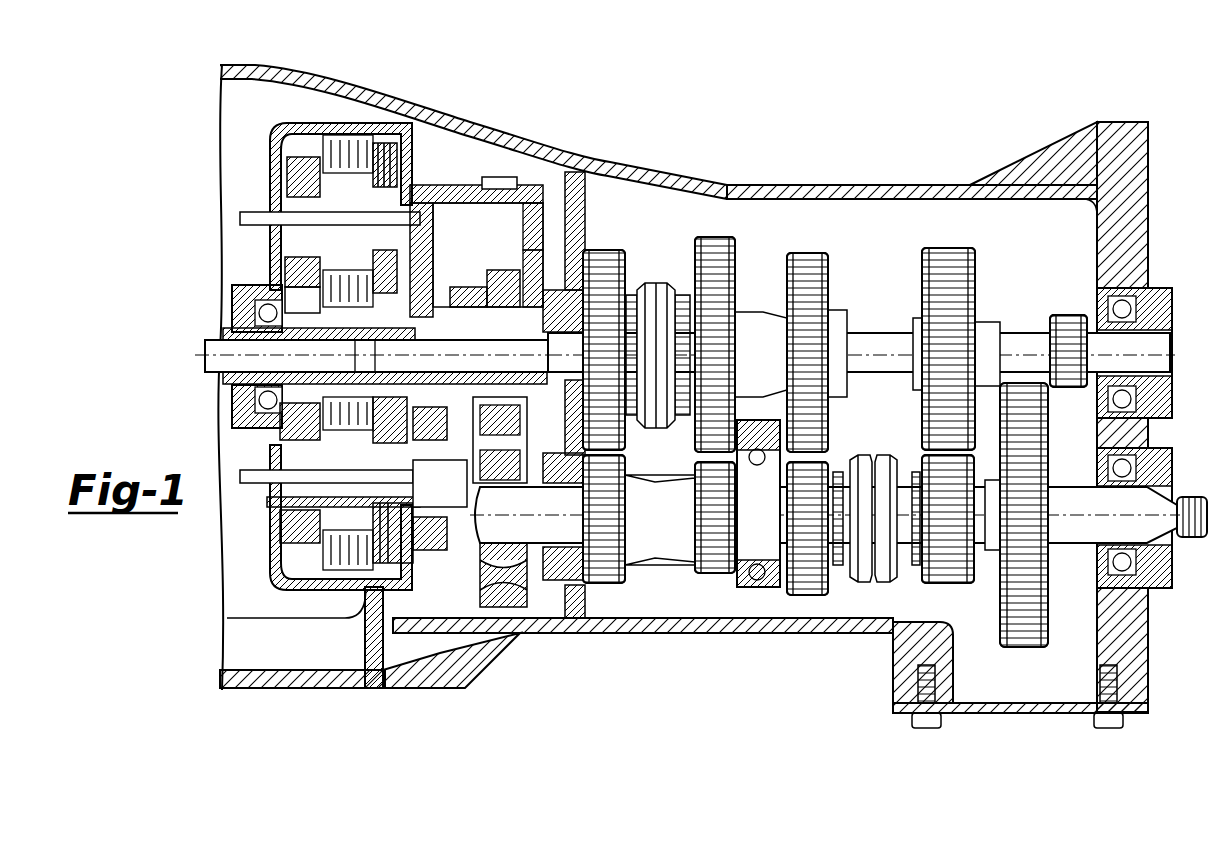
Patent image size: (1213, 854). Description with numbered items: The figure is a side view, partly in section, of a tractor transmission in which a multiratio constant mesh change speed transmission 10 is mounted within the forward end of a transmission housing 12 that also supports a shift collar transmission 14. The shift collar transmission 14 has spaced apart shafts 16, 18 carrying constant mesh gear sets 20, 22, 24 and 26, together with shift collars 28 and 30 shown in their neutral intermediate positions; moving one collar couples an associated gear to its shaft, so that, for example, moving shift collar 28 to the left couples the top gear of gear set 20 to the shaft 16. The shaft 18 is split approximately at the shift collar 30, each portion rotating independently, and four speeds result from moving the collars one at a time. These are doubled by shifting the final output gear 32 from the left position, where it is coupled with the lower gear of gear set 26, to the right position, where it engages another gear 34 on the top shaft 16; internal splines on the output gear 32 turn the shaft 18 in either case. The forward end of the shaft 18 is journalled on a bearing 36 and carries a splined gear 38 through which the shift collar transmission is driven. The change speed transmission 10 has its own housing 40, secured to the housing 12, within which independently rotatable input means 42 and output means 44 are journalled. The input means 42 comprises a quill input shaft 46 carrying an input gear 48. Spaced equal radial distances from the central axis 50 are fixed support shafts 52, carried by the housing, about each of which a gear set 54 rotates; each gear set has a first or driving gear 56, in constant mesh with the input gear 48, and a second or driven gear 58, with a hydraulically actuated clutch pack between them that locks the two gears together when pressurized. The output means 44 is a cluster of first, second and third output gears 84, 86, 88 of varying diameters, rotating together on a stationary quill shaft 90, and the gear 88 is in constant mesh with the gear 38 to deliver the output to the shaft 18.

The multiratio constant mesh change speed transmission 10 is at (275, 640).
The transmission housing 12 is at (375, 676).
The shift collar transmission 14 is at (848, 250).
The top shaft 16 is at (870, 335).
The lower shaft 18 is at (1080, 535).
The gear set 20 is at (612, 240).
The gear set 22 is at (713, 232).
The gear set 24 is at (800, 248).
The output gear set 26 is at (950, 240).
The shift collar 28 is at (655, 300).
The shift collar 30 is at (875, 578).
The final output gear 32 is at (1040, 642).
The another gear 34 is at (1068, 318).
The bearing 36 is at (580, 575).
The gear 38 is at (502, 640).
The housing 40 is at (563, 260).
The input means 42 is at (275, 283).
The output means 44 is at (437, 270).
The input shaft 46 is at (232, 328).
The input gear 48 is at (290, 305).
The central axis 50 is at (222, 368).
The fixed support shafts 52 is at (433, 162).
The gear set 54 is at (438, 200).
The first or driving gear 56 is at (303, 152).
The second or driven gear 58 is at (540, 250).
The first output gear 84 is at (500, 183).
The second output gear 86 is at (508, 270).
The third output gear 88 is at (540, 290).
The stationary quill shaft 90 is at (473, 390).